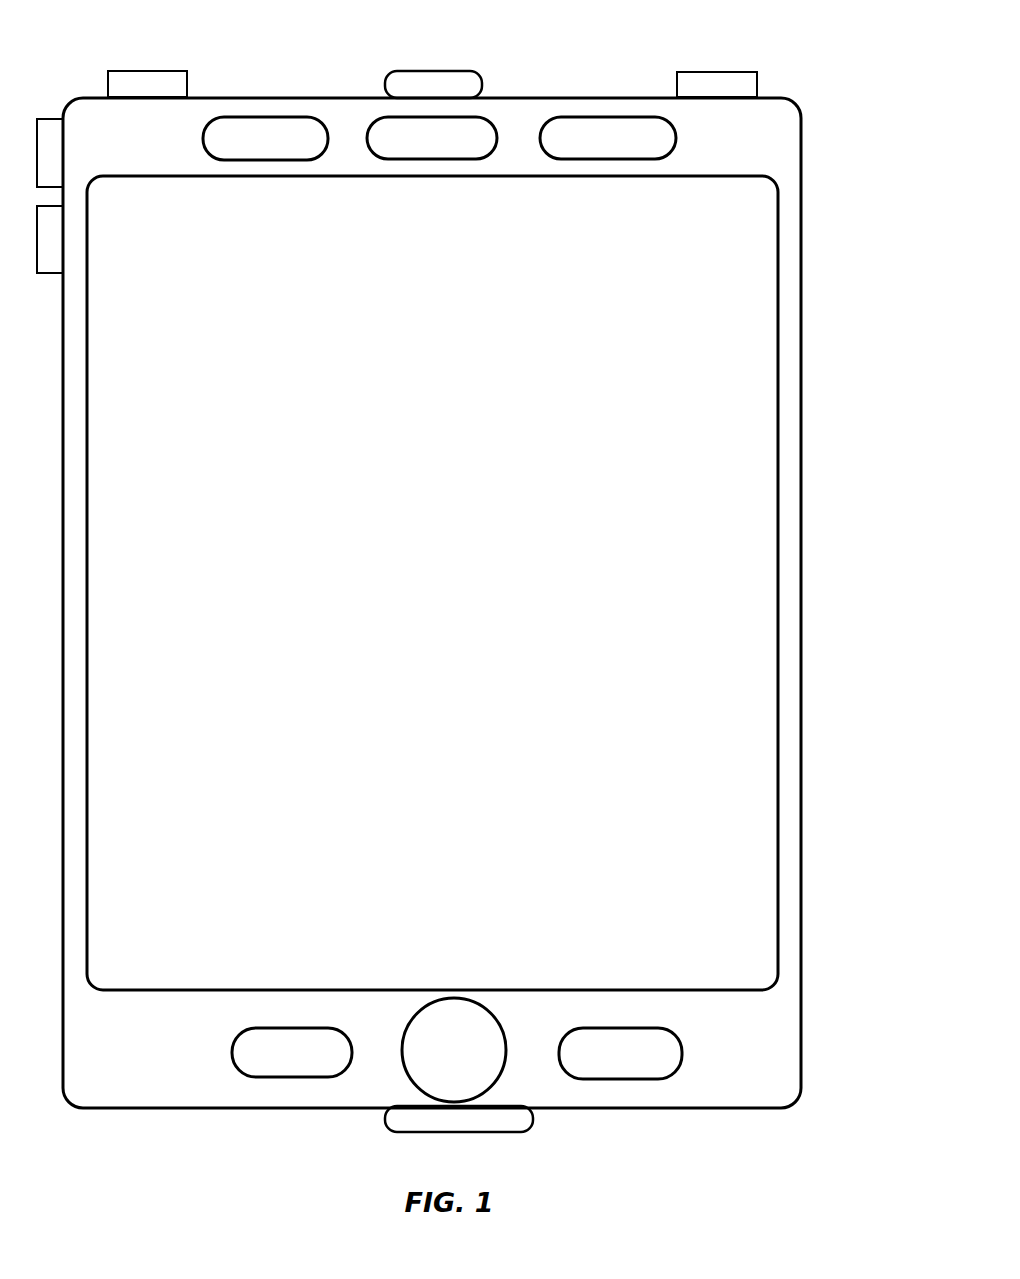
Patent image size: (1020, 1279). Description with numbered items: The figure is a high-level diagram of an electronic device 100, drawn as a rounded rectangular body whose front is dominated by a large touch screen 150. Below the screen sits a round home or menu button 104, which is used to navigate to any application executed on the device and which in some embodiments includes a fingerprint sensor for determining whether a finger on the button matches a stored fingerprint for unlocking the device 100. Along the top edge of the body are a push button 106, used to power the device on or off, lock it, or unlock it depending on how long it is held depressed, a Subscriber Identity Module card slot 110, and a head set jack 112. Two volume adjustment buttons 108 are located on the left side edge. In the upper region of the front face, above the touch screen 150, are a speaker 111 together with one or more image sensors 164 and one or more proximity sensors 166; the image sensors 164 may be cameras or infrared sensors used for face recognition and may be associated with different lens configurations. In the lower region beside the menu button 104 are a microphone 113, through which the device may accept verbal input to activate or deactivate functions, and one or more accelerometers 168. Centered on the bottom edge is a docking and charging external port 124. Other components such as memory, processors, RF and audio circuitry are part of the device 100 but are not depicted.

The electronic device 100 is at (838, 99).
The menu button 104 is at (454, 1050).
The push button 106 is at (147, 84).
The volume adjustment buttons 108 is at (54, 196).
The Subscriber Identity Module (SIM) card slot 110 is at (433, 84).
The speaker 111 is at (265, 138).
The head set jack 112 is at (717, 84).
The microphone 113 is at (292, 1052).
The docking/charging external port 124 is at (459, 1119).
The touch screen 150 is at (779, 477).
The image sensors 164 is at (432, 138).
The proximity sensors 166 is at (608, 138).
The accelerometers 168 is at (620, 1053).